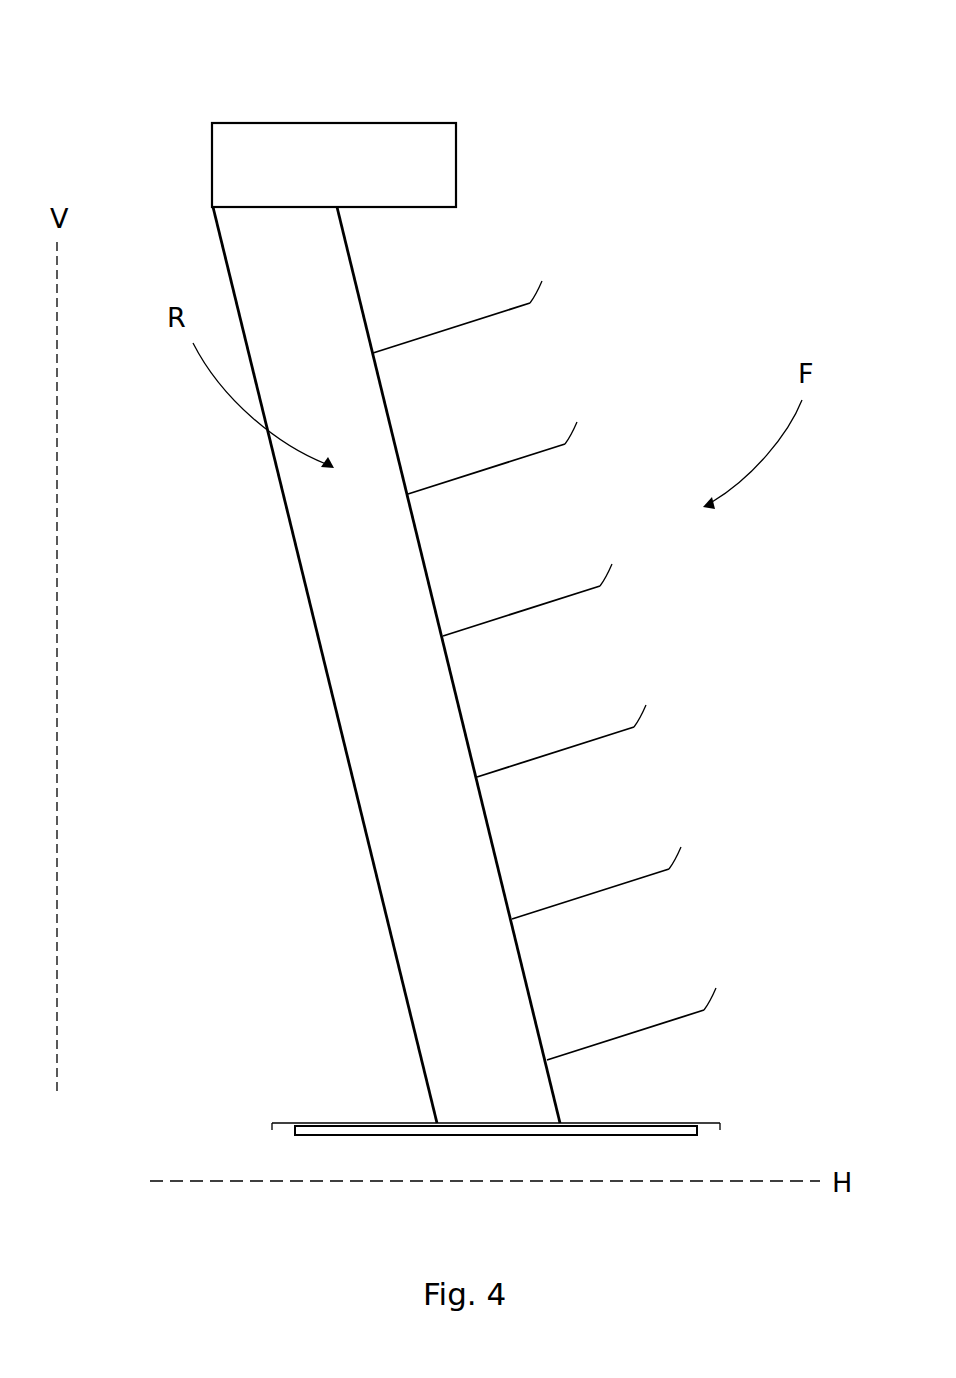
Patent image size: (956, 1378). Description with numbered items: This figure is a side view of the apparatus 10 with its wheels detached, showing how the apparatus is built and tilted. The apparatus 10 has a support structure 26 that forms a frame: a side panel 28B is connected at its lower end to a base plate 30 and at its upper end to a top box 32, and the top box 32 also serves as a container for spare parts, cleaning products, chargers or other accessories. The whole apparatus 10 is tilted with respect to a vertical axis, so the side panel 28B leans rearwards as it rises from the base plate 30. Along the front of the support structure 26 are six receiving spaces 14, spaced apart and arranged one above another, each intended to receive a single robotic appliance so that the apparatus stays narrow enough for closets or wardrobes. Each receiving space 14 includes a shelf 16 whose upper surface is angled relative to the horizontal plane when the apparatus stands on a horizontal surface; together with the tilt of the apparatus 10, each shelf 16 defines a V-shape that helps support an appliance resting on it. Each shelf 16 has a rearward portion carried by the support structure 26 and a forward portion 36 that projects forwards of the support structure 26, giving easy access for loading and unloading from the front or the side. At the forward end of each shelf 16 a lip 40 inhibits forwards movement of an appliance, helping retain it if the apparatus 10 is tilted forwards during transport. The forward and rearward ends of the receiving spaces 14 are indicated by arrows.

The apparatus 10 is at (643, 196).
The receiving space 14 is at (575, 670).
The shelf 16 is at (425, 336).
The support structure 26 is at (424, 921).
The side panel 28B is at (350, 572).
The base plate 30 is at (348, 1120).
The top box 32 is at (303, 147).
The forward portion 36 is at (490, 316).
The lip 40 is at (537, 293).